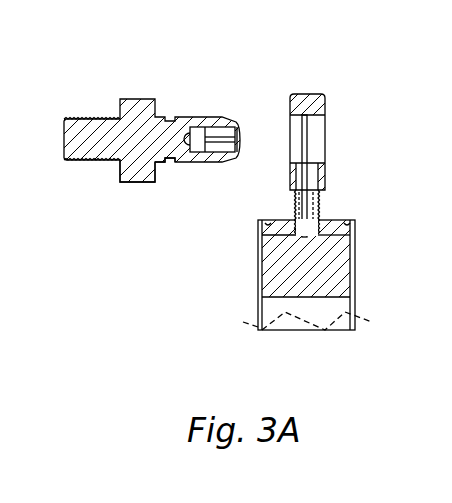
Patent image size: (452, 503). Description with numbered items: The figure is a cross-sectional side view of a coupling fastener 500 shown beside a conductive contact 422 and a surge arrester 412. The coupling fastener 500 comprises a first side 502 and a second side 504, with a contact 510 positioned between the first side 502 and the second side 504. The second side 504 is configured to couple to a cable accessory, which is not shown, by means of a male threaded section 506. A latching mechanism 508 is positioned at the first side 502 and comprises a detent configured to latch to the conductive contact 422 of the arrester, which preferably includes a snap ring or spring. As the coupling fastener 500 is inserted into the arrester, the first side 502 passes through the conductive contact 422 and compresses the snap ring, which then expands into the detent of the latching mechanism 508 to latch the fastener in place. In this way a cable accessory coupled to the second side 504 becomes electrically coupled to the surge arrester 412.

The coupling fastener 500 is at (135, 70).
The first side 502 is at (197, 115).
The second side 504 is at (70, 117).
The male threaded section 506 is at (78, 163).
The latching mechanism 508 is at (172, 168).
The contact 510 is at (143, 183).
The conductive contact 422 is at (302, 93).
The surge arrester 412 is at (337, 272).